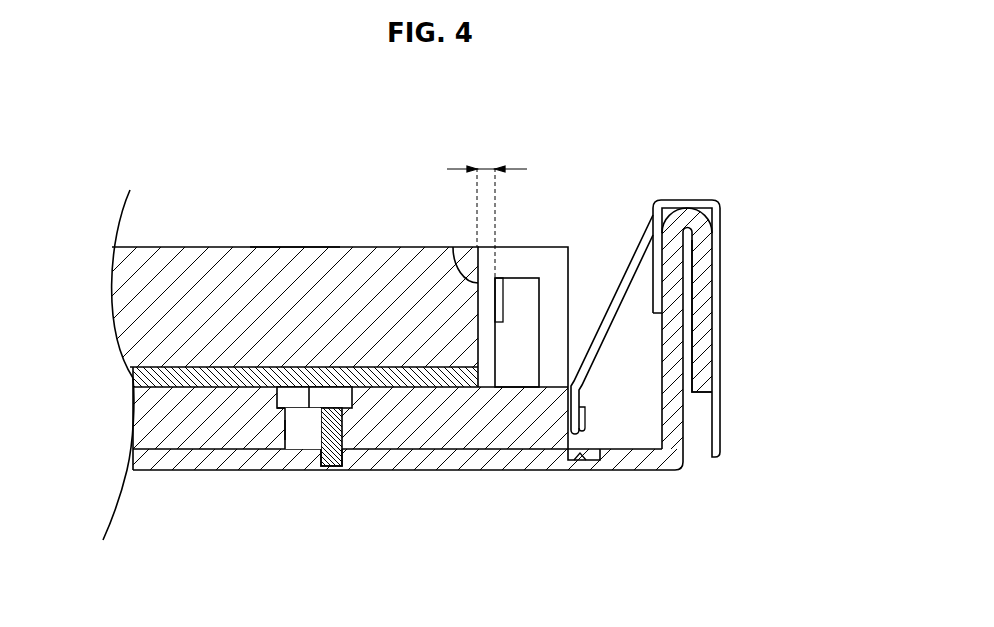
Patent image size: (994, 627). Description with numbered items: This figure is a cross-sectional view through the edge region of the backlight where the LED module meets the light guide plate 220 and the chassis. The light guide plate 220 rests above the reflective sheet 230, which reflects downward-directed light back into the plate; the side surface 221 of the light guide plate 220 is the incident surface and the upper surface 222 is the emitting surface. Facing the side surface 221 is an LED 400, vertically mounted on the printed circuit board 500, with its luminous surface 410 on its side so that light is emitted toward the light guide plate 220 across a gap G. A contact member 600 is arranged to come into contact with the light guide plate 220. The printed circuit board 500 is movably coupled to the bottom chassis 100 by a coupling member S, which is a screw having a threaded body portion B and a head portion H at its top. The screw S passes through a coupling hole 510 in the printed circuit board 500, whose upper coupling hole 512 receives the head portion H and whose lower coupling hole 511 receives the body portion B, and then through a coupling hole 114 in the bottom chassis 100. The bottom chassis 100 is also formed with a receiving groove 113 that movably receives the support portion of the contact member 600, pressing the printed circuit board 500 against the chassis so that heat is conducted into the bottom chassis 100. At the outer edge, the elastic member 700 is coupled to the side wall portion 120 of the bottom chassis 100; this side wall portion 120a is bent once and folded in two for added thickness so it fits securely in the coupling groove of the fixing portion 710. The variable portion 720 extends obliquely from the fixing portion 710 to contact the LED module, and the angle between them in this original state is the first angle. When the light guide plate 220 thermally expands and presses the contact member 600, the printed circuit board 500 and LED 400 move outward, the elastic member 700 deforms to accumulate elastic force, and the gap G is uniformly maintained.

The bottom chassis 100 is at (198, 470).
The receiving groove 113 is at (578, 470).
The coupling hole 114 is at (322, 465).
The side wall portion 120 is at (774, 305).
The side wall portion 120a is at (697, 240).
The light guide plate 220 is at (188, 262).
The side surface 221 is at (455, 247).
The upper surface 222 is at (293, 247).
The reflective sheet 230 is at (133, 372).
The LED 400 is at (528, 290).
The luminous surface 410 is at (500, 303).
The printed circuit board 500 is at (148, 420).
The coupling hole 510 is at (268, 500).
The lower coupling hole 511 is at (285, 428).
The upper coupling hole 512 is at (278, 410).
The contact member 600 is at (558, 257).
The elastic member 700 is at (645, 257).
The fixing portion 710 is at (686, 280).
The variable portion 720 is at (617, 283).
The body portion B is at (342, 428).
The head portion H is at (365, 406).
The coupling member S is at (342, 497).
The gap G is at (487, 210).